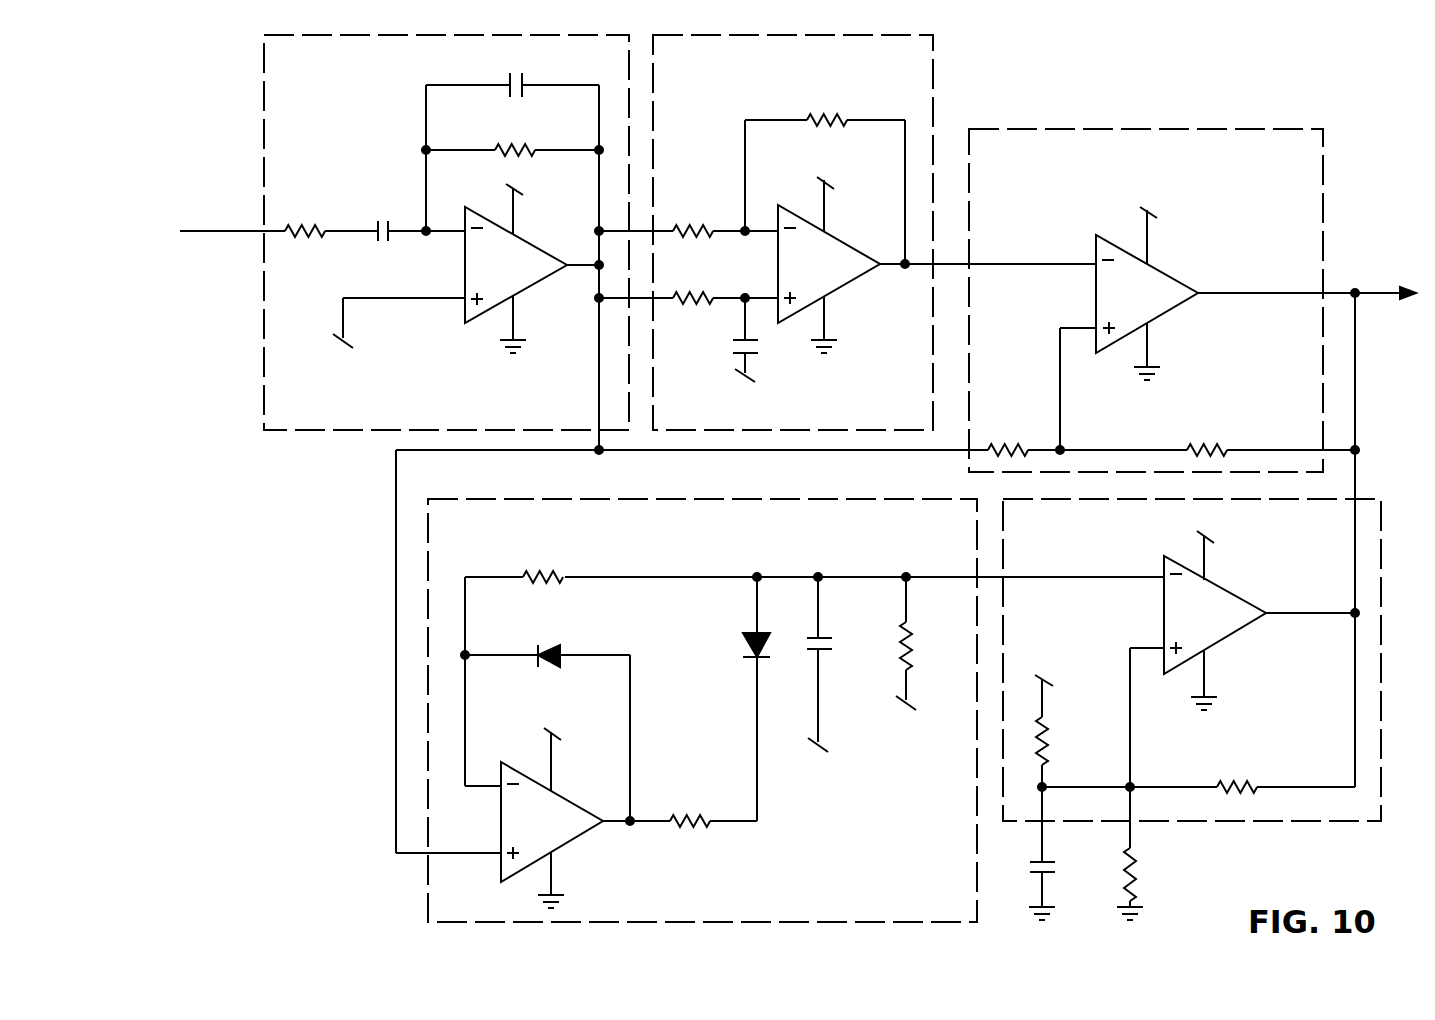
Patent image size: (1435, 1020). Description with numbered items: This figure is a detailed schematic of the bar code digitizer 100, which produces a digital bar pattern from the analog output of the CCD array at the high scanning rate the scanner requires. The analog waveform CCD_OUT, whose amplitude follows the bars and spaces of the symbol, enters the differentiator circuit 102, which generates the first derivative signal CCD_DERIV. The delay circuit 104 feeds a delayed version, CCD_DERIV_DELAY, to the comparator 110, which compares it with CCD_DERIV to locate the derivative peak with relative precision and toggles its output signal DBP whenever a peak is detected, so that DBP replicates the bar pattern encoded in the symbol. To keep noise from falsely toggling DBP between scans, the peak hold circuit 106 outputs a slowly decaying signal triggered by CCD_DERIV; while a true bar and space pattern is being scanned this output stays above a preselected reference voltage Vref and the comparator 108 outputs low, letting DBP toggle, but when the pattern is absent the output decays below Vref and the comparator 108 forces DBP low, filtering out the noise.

The bar code digitizer 100 is at (272, 538).
The differentiator circuit 102 is at (264, 82).
The delay circuit 104 is at (933, 77).
The peak hold circuit 106 is at (423, 882).
The comparator 108 is at (1320, 823).
The comparator 110 is at (1187, 128).